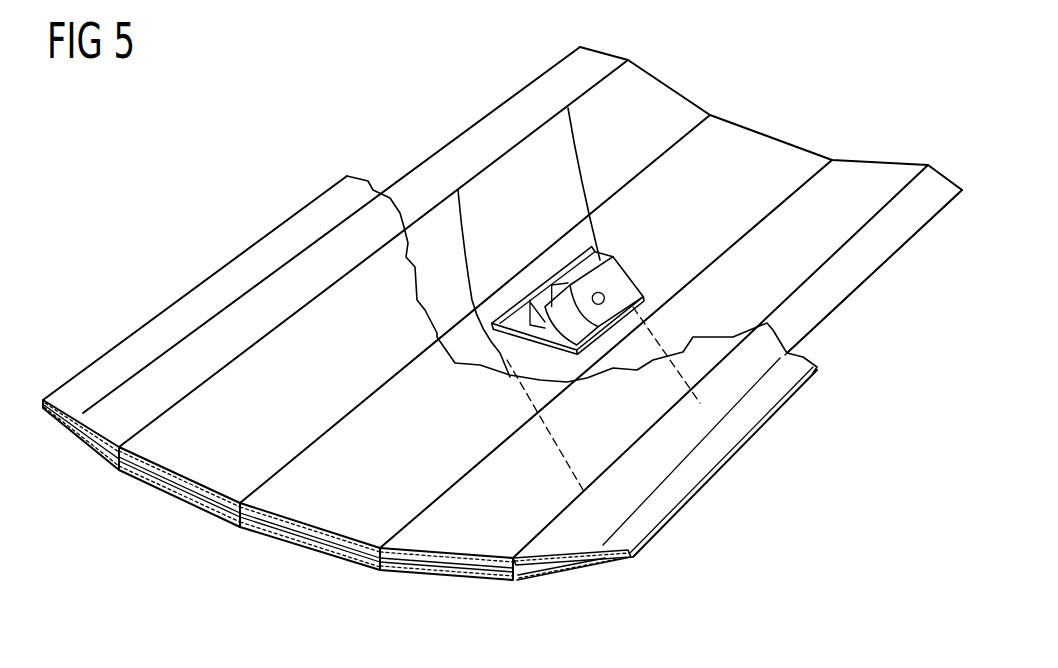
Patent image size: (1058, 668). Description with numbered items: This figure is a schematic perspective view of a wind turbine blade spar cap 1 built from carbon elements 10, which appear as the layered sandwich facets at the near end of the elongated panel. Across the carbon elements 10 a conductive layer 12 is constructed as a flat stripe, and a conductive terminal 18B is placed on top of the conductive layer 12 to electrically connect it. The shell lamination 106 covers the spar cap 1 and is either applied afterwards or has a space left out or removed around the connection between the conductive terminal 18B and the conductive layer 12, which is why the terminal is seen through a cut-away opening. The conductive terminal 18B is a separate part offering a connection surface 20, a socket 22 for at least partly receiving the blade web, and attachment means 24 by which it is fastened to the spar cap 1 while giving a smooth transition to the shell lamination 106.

The wind turbine blade spar cap 1 is at (222, 207).
The shell lamination 106 is at (343, 247).
The conductive layer 12 is at (488, 193).
The carbon elements 10 is at (212, 512).
The conductive terminal 18B is at (633, 293).
The connection surface 20 is at (597, 280).
The attachment means 24 is at (604, 293).
The socket 22 is at (522, 335).